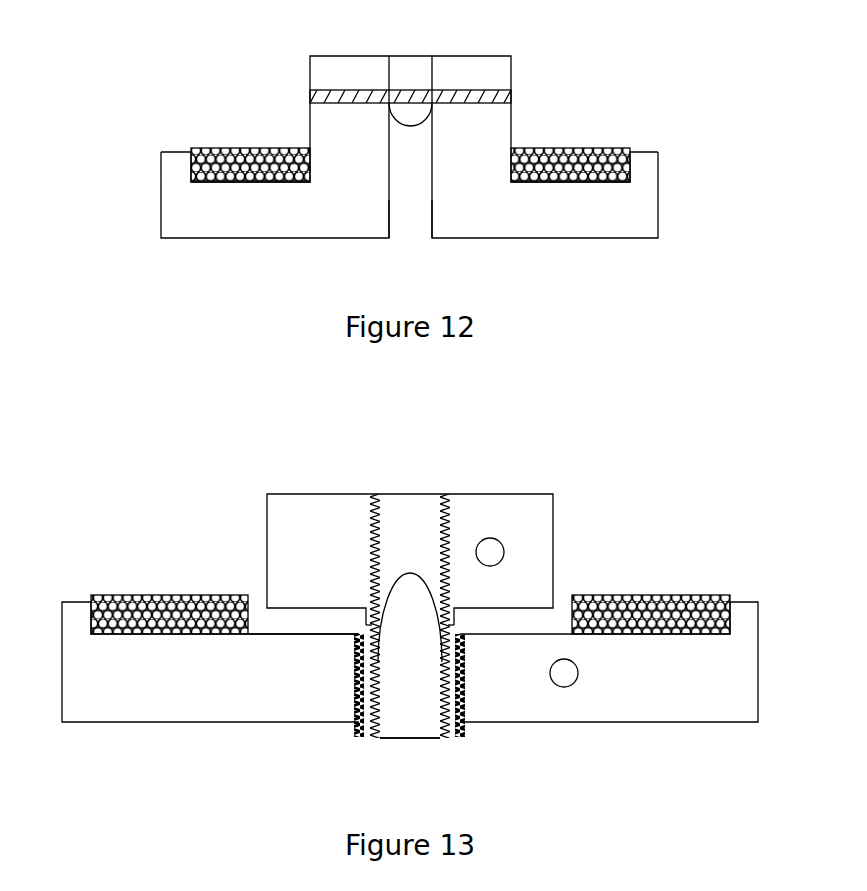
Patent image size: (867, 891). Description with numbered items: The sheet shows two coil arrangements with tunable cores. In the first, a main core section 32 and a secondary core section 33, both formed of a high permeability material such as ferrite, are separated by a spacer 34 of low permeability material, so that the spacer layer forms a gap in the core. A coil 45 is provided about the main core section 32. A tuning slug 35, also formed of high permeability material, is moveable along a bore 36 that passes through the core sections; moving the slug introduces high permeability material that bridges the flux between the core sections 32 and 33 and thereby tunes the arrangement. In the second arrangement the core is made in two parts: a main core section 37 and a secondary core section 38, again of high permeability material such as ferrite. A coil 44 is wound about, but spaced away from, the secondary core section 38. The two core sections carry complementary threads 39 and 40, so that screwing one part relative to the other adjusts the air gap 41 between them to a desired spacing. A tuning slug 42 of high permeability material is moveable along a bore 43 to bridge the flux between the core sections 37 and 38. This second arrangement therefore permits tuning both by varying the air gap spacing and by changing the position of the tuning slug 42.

In FIG. 12, the main core section 32 is at (188, 210).
In FIG. 12, the secondary core section 33 is at (327, 78).
In FIG. 12, the spacer 34 is at (320, 95).
In FIG. 12, the tuning slug 35 is at (413, 66).
In FIG. 12, the bore 36 is at (410, 225).
In FIG. 12, the coil 45 is at (225, 150).
In FIG. 13, the main core section 37 is at (126, 687).
In FIG. 13, the secondary core section 38 is at (316, 507).
In FIG. 13, the thread 39 is at (355, 687).
In FIG. 13, the thread 40 is at (360, 707).
In FIG. 13, the air gap 41 is at (280, 623).
In FIG. 13, the tuning slug 42 is at (416, 713).
In FIG. 13, the bore 43 is at (417, 517).
In FIG. 13, the coil 44 is at (142, 597).